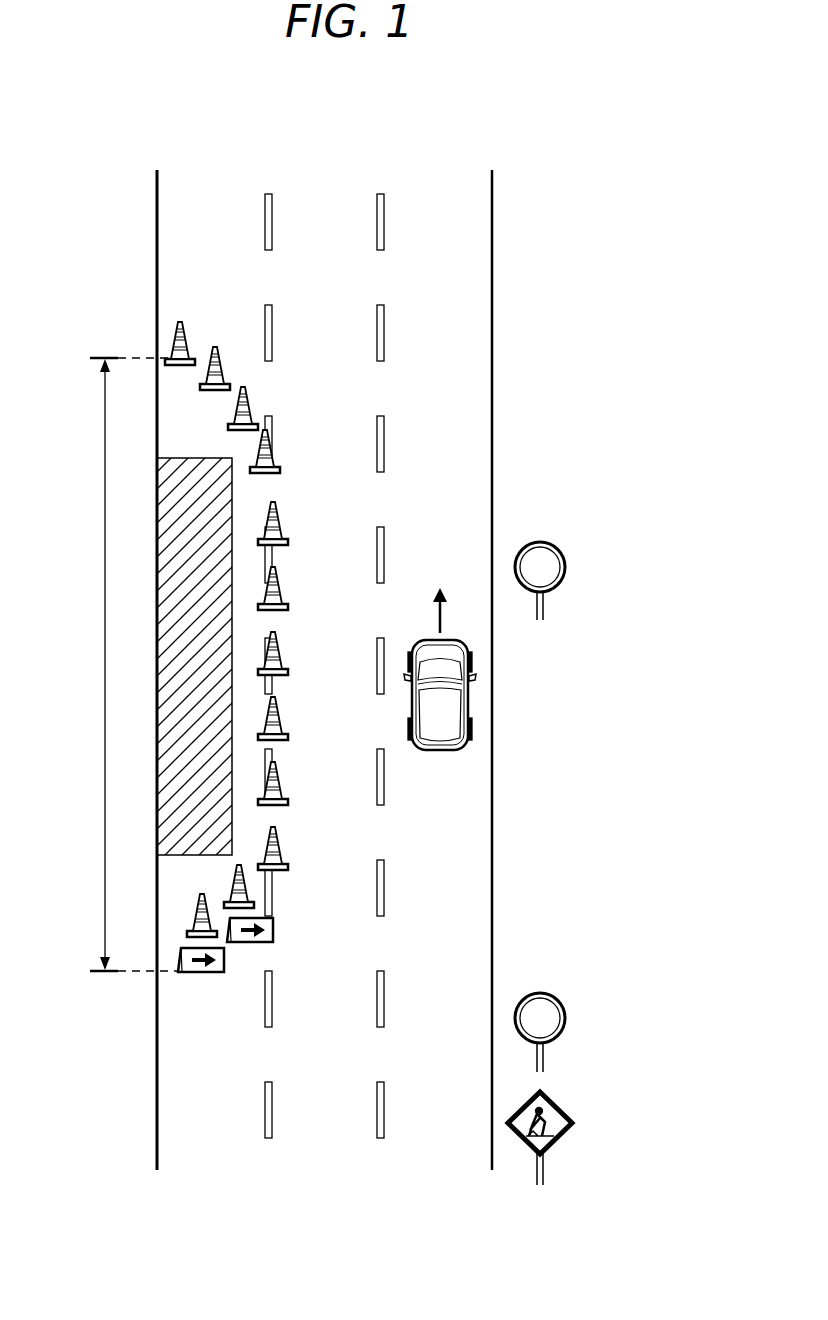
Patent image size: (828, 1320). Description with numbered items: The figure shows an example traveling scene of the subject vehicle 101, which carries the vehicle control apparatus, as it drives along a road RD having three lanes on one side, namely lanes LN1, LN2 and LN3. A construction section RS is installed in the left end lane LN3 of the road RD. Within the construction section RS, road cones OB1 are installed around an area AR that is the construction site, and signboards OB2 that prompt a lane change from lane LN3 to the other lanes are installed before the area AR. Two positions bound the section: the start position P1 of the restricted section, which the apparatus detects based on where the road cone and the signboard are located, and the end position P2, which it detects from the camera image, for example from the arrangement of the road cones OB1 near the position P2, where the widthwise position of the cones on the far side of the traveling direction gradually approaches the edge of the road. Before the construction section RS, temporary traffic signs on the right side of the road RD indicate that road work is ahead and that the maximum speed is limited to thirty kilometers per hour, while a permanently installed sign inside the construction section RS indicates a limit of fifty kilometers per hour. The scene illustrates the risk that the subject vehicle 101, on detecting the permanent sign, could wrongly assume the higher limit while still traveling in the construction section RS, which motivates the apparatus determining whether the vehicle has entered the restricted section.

The road RD is at (438, 163).
The lane LN1 is at (430, 1125).
The lane LN2 is at (317, 1125).
The left end lane LN3 is at (207, 1125).
The area AR is at (198, 468).
The road cones OB1 is at (185, 343).
The signboards OB2 is at (200, 973).
The start position of the restricted section P1 is at (117, 972).
The end position of the restricted section P2 is at (113, 360).
The construction section RS is at (84, 664).
The subject vehicle 101 is at (470, 697).